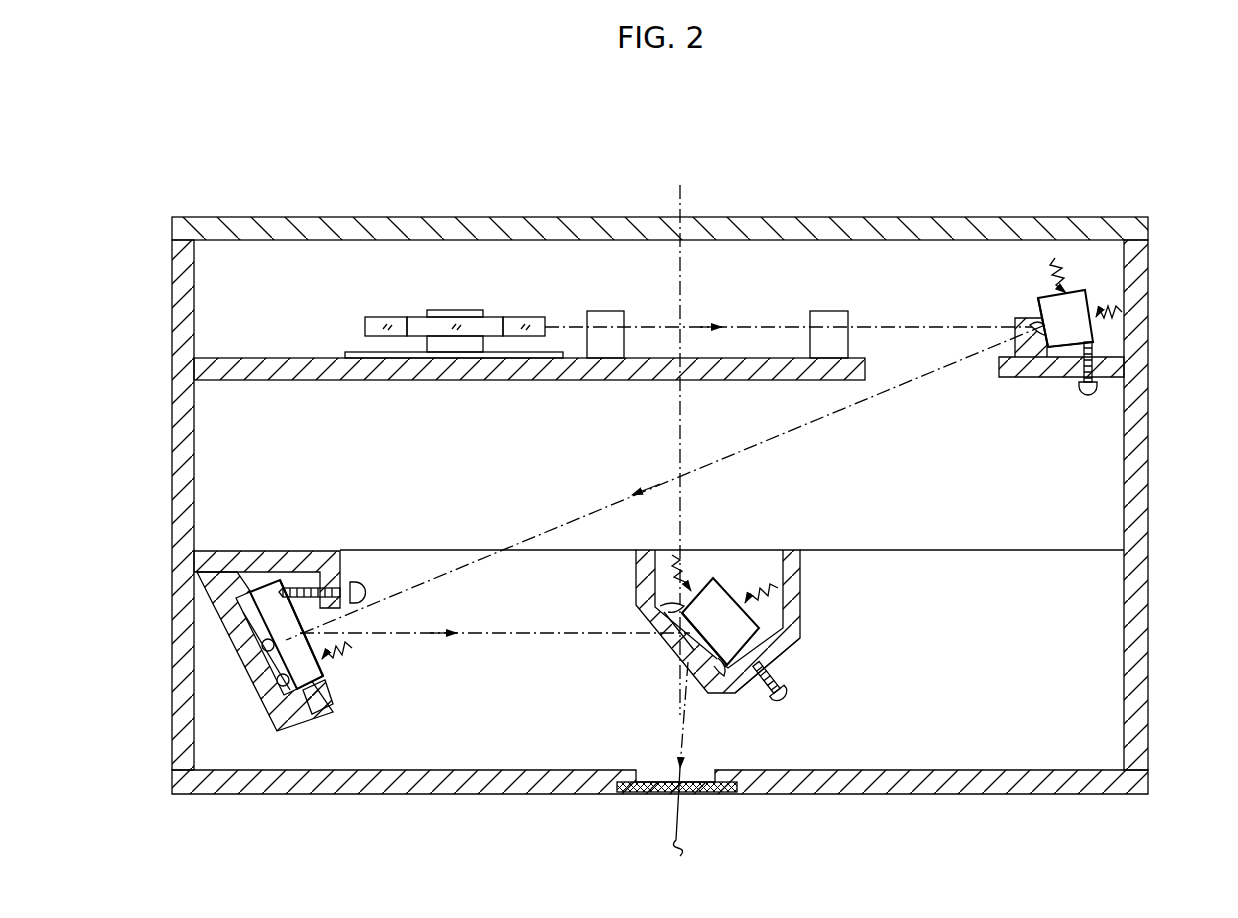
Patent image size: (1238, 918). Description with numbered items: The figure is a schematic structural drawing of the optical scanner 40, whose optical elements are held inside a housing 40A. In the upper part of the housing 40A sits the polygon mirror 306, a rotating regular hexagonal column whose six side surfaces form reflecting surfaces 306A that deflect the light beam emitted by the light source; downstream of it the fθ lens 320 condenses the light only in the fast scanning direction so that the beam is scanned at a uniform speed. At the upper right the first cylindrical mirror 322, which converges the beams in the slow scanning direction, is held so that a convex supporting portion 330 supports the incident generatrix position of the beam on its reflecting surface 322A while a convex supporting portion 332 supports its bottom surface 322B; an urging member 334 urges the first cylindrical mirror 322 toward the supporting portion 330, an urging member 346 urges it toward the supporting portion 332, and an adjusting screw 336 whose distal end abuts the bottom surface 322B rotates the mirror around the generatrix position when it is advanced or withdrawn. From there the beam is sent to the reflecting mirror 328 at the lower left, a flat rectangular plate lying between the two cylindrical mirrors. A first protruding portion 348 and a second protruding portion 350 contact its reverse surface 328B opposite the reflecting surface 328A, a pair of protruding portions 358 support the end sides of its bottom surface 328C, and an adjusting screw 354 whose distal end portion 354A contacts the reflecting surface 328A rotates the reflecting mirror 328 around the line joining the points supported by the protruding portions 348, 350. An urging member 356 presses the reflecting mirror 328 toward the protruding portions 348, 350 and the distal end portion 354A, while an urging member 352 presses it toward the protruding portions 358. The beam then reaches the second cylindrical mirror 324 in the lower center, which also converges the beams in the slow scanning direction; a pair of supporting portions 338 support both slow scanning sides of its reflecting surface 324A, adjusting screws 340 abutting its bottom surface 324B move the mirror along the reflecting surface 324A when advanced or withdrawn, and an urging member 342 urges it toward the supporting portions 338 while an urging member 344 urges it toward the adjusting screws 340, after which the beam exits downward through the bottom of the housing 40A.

The optical scanner 40 is at (143, 165).
The housing 40A is at (1149, 521).
The polygon mirror 306 is at (398, 308).
The reflecting surface 306A is at (520, 316).
The fθ lens 320 is at (848, 303).
The first cylindrical mirror 322 is at (1087, 286).
The reflecting surface 322A is at (1043, 303).
The bottom surface 322B is at (1072, 357).
The second cylindrical mirror 324 is at (752, 626).
The reflecting surface 324A is at (702, 658).
The bottom surface 324B is at (780, 638).
The reflecting mirror 328 is at (258, 615).
The reflecting surface 328A is at (327, 640).
The reverse surface 328B is at (232, 605).
The bottom surface 328C is at (303, 689).
The supporting portion 330 is at (1030, 323).
The supporting portion 332 is at (1038, 378).
The urging member 334 is at (1123, 313).
The adjusting screw 336 is at (1095, 393).
The supporting portion 338 is at (654, 609).
The adjusting screw 340 is at (791, 701).
The urging member 342 is at (778, 589).
The urging member 344 is at (684, 568).
The urging member 346 is at (1075, 265).
The first protruding portion 348 is at (268, 649).
The second protruding portion 350 is at (288, 690).
The urging member 352 is at (244, 549).
The adjusting screw 354 is at (355, 584).
The distal end portion 354A is at (264, 581).
The urging member 356 is at (350, 651).
The protruding portion 358 is at (333, 685).